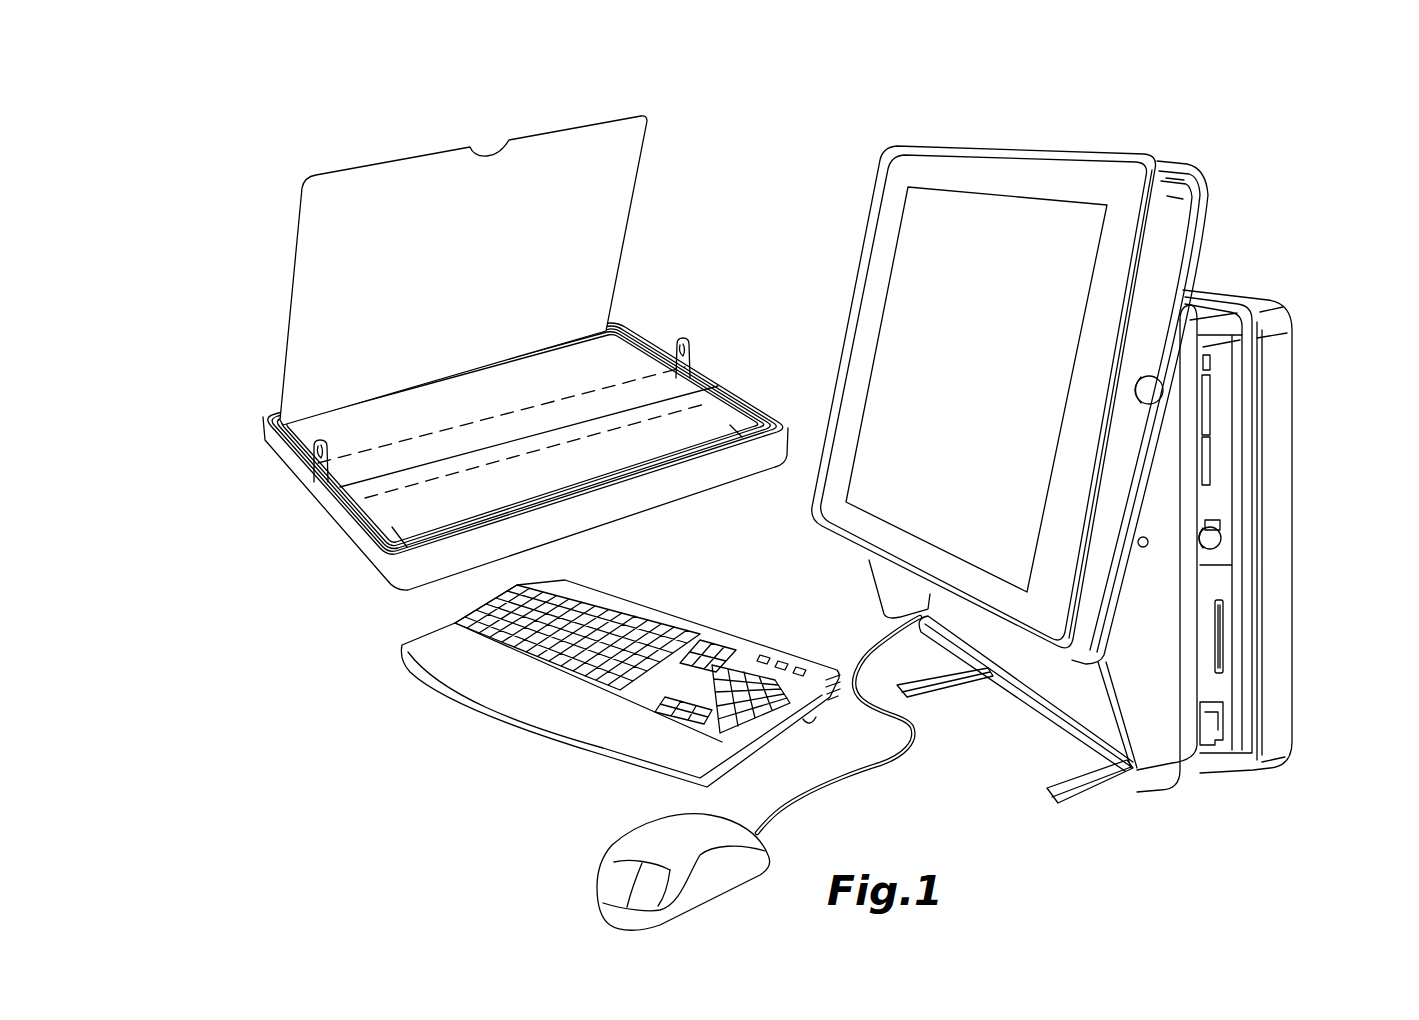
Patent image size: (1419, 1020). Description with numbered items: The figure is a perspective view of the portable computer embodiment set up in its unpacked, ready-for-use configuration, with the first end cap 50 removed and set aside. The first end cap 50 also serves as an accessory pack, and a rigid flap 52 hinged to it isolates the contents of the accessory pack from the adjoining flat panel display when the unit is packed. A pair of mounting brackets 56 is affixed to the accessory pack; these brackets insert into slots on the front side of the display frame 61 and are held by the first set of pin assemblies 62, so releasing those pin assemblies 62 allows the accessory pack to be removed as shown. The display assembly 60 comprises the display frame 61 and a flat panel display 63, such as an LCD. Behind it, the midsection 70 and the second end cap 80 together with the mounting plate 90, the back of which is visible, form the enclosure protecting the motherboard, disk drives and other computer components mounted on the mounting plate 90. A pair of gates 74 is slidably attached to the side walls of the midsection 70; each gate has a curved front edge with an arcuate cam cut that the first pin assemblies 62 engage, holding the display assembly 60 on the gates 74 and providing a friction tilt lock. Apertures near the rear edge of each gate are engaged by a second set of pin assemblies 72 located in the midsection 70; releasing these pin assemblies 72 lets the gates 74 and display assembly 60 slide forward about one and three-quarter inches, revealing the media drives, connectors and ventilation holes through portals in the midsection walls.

The first end cap 50 is at (302, 520).
The rigid flap 52 is at (325, 237).
The mounting brackets 56 is at (690, 340).
The display assembly 60 is at (1054, 369).
The display frame 61 is at (914, 175).
The first set of pin assemblies 62 is at (1145, 392).
The flat panel display 63 is at (966, 238).
The midsection 70 is at (1262, 583).
The second set of pin assemblies 72 is at (1225, 535).
The gates 74 is at (890, 588).
The second end cap 80 is at (1272, 623).
The mounting plate 90 is at (1055, 683).